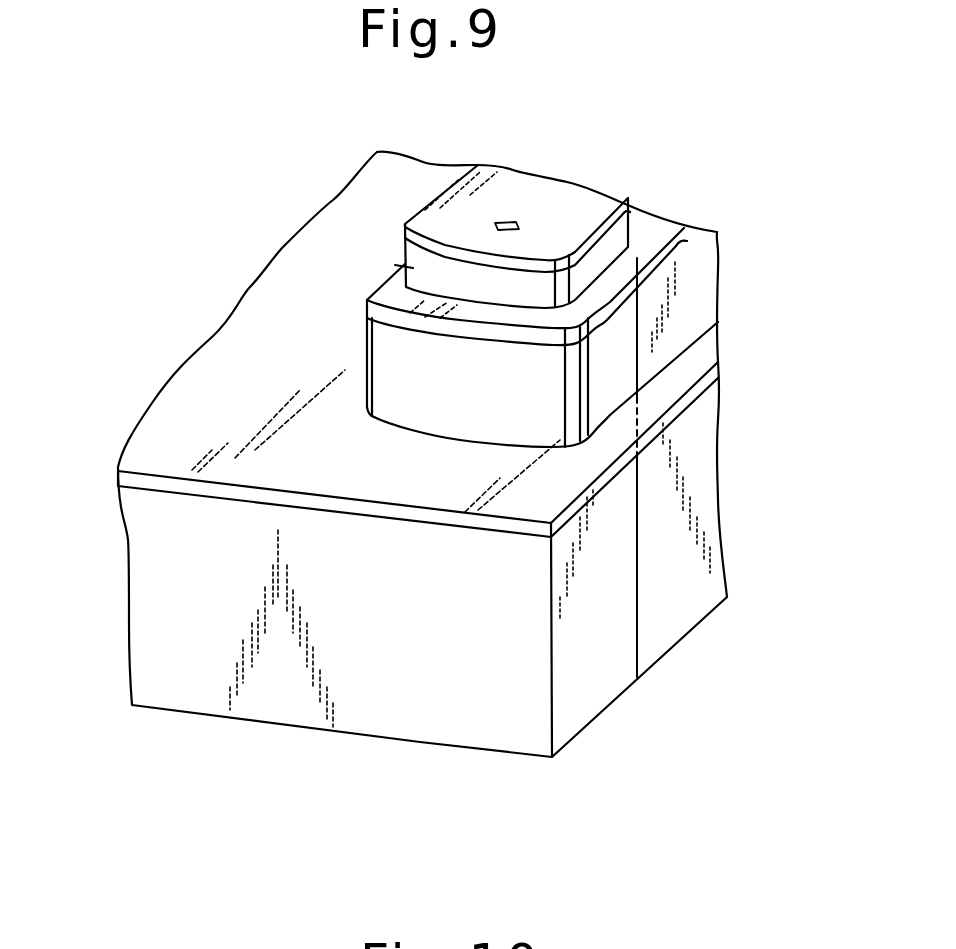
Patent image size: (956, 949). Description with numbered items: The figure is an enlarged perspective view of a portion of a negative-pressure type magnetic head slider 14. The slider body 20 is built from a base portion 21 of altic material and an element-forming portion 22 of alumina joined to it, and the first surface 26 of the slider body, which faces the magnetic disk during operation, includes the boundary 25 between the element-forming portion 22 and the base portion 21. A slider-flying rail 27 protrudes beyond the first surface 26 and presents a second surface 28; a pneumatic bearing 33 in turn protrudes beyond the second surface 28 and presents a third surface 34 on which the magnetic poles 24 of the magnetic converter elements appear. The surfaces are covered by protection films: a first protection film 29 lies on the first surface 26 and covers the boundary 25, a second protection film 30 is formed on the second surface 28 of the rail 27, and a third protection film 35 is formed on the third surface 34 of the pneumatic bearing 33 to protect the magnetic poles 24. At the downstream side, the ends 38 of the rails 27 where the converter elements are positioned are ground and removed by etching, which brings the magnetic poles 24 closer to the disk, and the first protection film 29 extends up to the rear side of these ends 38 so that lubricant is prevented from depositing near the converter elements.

The magnetic head slider 14 is at (233, 255).
The slider body 20 is at (393, 155).
The base portion 21 is at (693, 600).
The element-forming portion 22 is at (590, 693).
The magnetic poles 24 is at (507, 222).
The boundary 25 is at (642, 640).
The first surface 26 is at (192, 497).
The slider-flying rails 27 is at (683, 303).
The second surfaces 28 is at (685, 242).
The first protection film 29 is at (211, 413).
The second protection films 30 is at (385, 288).
The pneumatic bearings 33 is at (402, 266).
The third surfaces 34 is at (640, 200).
The third protection films 35 is at (583, 206).
The ends of the rails 38 is at (504, 391).